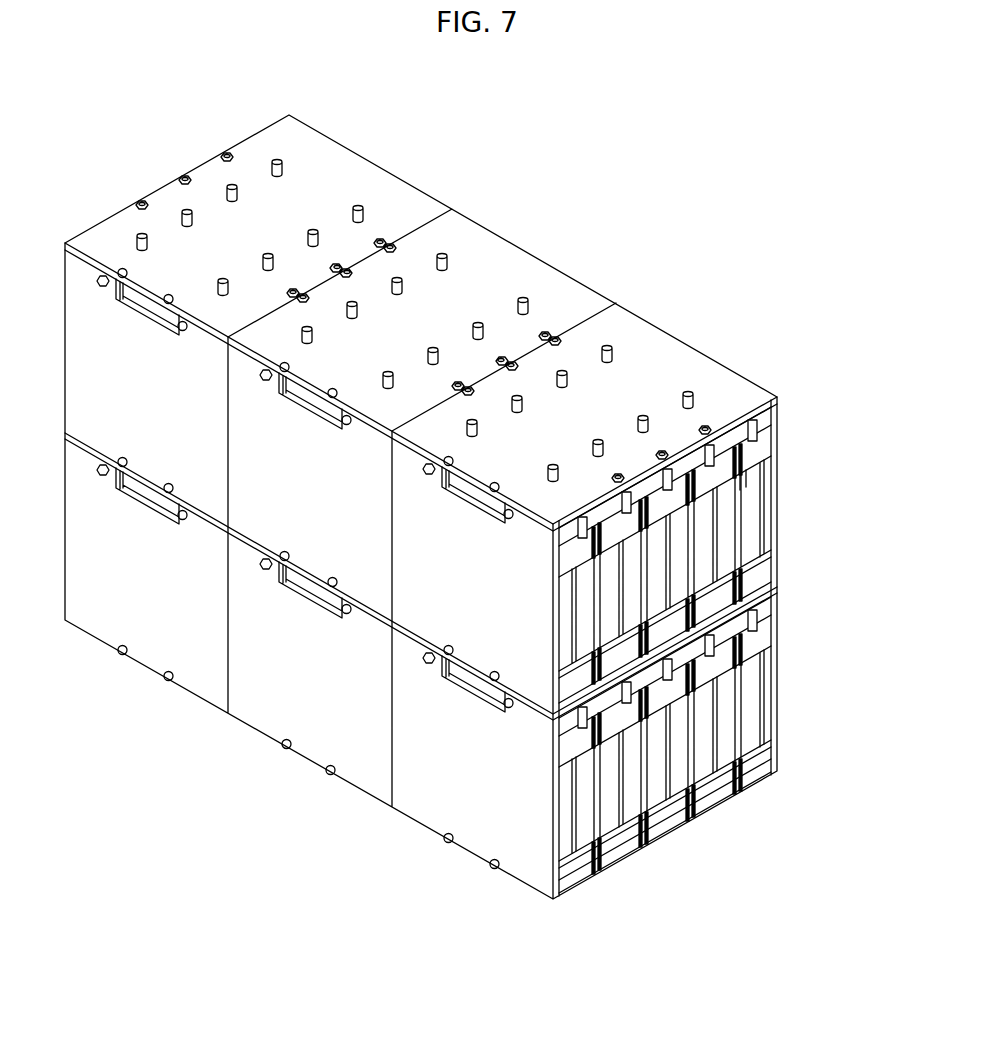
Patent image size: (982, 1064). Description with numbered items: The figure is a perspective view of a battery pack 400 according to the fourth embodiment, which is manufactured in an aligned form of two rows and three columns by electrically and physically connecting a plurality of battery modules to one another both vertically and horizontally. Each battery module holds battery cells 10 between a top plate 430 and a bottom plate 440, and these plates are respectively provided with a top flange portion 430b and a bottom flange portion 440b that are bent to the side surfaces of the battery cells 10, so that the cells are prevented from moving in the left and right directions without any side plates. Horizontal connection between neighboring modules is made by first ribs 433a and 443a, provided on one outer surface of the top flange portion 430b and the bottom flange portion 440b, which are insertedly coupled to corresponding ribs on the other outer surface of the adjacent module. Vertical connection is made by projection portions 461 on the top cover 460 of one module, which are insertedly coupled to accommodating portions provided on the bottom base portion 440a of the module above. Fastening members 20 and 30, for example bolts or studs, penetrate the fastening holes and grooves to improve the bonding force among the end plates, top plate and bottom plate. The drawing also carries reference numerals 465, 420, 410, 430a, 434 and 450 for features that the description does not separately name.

The battery pack 400 is at (583, 225).
The top cover 460 is at (296, 139).
The projection portions 461 is at (276, 160).
The nuts 465 is at (181, 179).
The upper battery module 420 is at (784, 556).
The lower battery module 410 is at (490, 830).
The top plate 430 is at (831, 418).
The upper frame bar first part 430a is at (753, 424).
The top flange portion 430b is at (767, 452).
The fixing tabs 434 is at (712, 450).
The first rib 433a is at (753, 467).
The battery cells 10 is at (766, 704).
The spacer 450 is at (741, 750).
The bottom plate 440 is at (707, 858).
The bottom base portion 440a is at (677, 833).
The bottom flange portion 440b is at (700, 808).
The first rib 443a is at (606, 866).
The fastening member 20 is at (328, 775).
The fastening member 30 is at (505, 710).